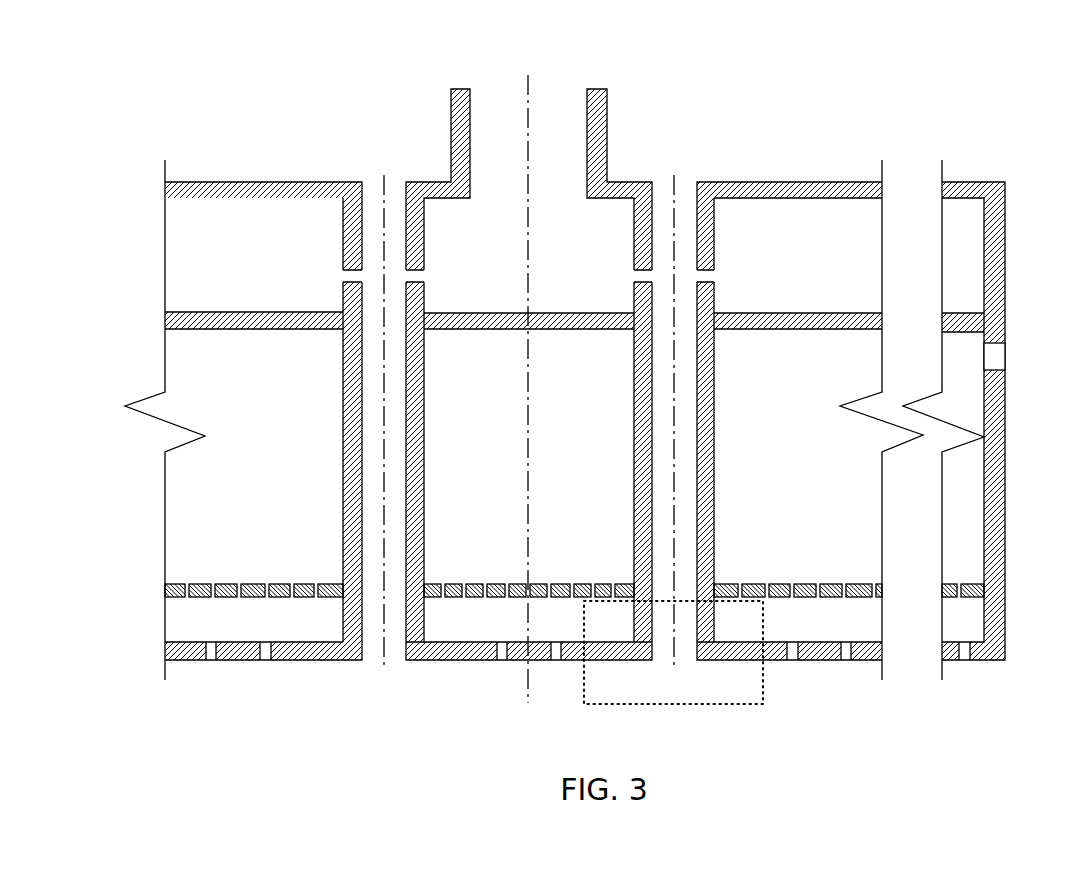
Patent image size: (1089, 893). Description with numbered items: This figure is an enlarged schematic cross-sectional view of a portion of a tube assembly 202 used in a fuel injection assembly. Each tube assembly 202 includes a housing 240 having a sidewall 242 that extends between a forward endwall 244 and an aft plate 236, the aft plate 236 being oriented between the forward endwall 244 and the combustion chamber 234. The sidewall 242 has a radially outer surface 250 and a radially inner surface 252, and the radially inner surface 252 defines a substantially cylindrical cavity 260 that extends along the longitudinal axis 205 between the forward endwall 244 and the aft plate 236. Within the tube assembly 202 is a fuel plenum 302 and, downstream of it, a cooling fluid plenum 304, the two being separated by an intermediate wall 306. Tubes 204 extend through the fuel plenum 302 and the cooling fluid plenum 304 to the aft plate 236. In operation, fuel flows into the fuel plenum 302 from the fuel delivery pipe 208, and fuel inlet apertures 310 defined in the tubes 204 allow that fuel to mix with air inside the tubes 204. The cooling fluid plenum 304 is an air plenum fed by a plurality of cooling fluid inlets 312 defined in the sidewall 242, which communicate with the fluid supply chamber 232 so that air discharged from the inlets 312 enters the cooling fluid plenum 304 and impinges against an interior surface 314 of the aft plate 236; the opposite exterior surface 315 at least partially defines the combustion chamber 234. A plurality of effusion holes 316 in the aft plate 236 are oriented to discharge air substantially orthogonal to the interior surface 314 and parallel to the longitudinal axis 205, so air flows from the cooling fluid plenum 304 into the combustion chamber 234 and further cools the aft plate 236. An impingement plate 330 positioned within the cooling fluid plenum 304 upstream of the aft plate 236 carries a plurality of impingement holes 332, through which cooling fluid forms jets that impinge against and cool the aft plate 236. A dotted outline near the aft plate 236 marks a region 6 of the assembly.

The tube assembly 202 is at (843, 72).
The tubes 204 is at (372, 176).
The longitudinal axis 205 is at (528, 446).
The fuel delivery pipe 208 is at (480, 117).
The fluid supply chamber 232 is at (215, 140).
The combustion chamber 234 is at (537, 752).
The aft plate 236 is at (299, 662).
The housing 240 is at (183, 182).
The sidewall 242 is at (1005, 220).
The forward endwall 244 is at (310, 182).
The radially outer surface 250 is at (1005, 525).
The radially inner surface 252 is at (984, 545).
The substantially cylindrical cavity 260 is at (556, 535).
The fuel plenum 302 is at (547, 295).
The cooling fluid plenum 304 is at (228, 432).
The intermediate wall 306 is at (203, 312).
The fuel inlet apertures 310 is at (340, 274).
The cooling fluid inlets 312 is at (1010, 364).
The interior surface 314 is at (180, 642).
The exterior surface 315 is at (246, 662).
The effusion holes 316 is at (211, 664).
The impingement plate 330 is at (196, 584).
The impingement holes 332 is at (240, 580).
The detail region 6 is at (695, 705).